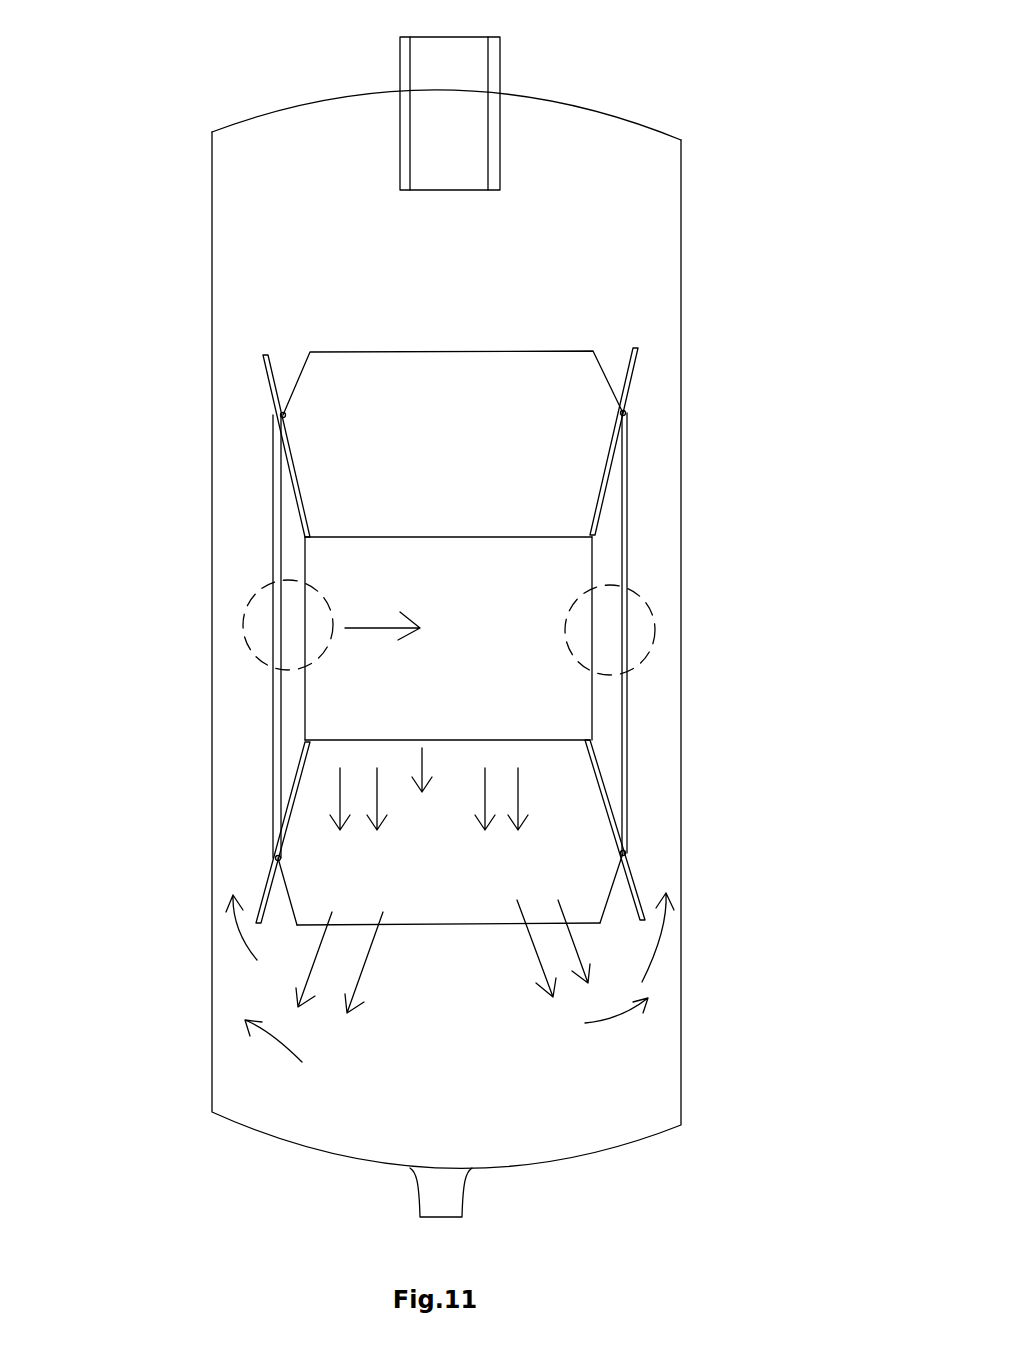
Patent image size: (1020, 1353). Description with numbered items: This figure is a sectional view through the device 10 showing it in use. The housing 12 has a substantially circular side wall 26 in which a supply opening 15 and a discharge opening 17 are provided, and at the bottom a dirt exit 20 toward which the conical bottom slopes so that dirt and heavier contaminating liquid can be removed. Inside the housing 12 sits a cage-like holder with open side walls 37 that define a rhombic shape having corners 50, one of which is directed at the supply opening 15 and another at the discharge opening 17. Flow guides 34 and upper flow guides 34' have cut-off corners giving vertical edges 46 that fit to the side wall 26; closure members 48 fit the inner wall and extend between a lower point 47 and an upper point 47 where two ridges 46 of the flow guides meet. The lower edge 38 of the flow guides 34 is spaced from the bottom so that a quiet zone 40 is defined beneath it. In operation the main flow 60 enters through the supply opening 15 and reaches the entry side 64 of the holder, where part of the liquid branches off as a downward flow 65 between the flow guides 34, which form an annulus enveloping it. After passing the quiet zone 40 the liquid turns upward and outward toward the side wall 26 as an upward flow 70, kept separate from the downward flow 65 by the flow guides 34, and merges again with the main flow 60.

The device 10 is at (240, 100).
The housing 12 is at (210, 255).
The side wall 26 is at (682, 193).
The dirt exit 20 is at (463, 1192).
The upper flow guides 34' is at (453, 444).
The flow guides 34 is at (448, 832).
The side walls 37 is at (462, 593).
The entry side 64 is at (442, 687).
The lower edge 38 is at (440, 930).
The quiet zone 40 is at (432, 1062).
The vertical edges 46 is at (297, 380).
The point 47 is at (280, 414).
The closure members 48 is at (290, 537).
The corners 50 is at (300, 583).
The supply opening 15 is at (243, 640).
The discharge opening 17 is at (630, 590).
The main flow 60 is at (372, 620).
The downward flow 65 is at (443, 880).
The upward flow 70 is at (237, 932).